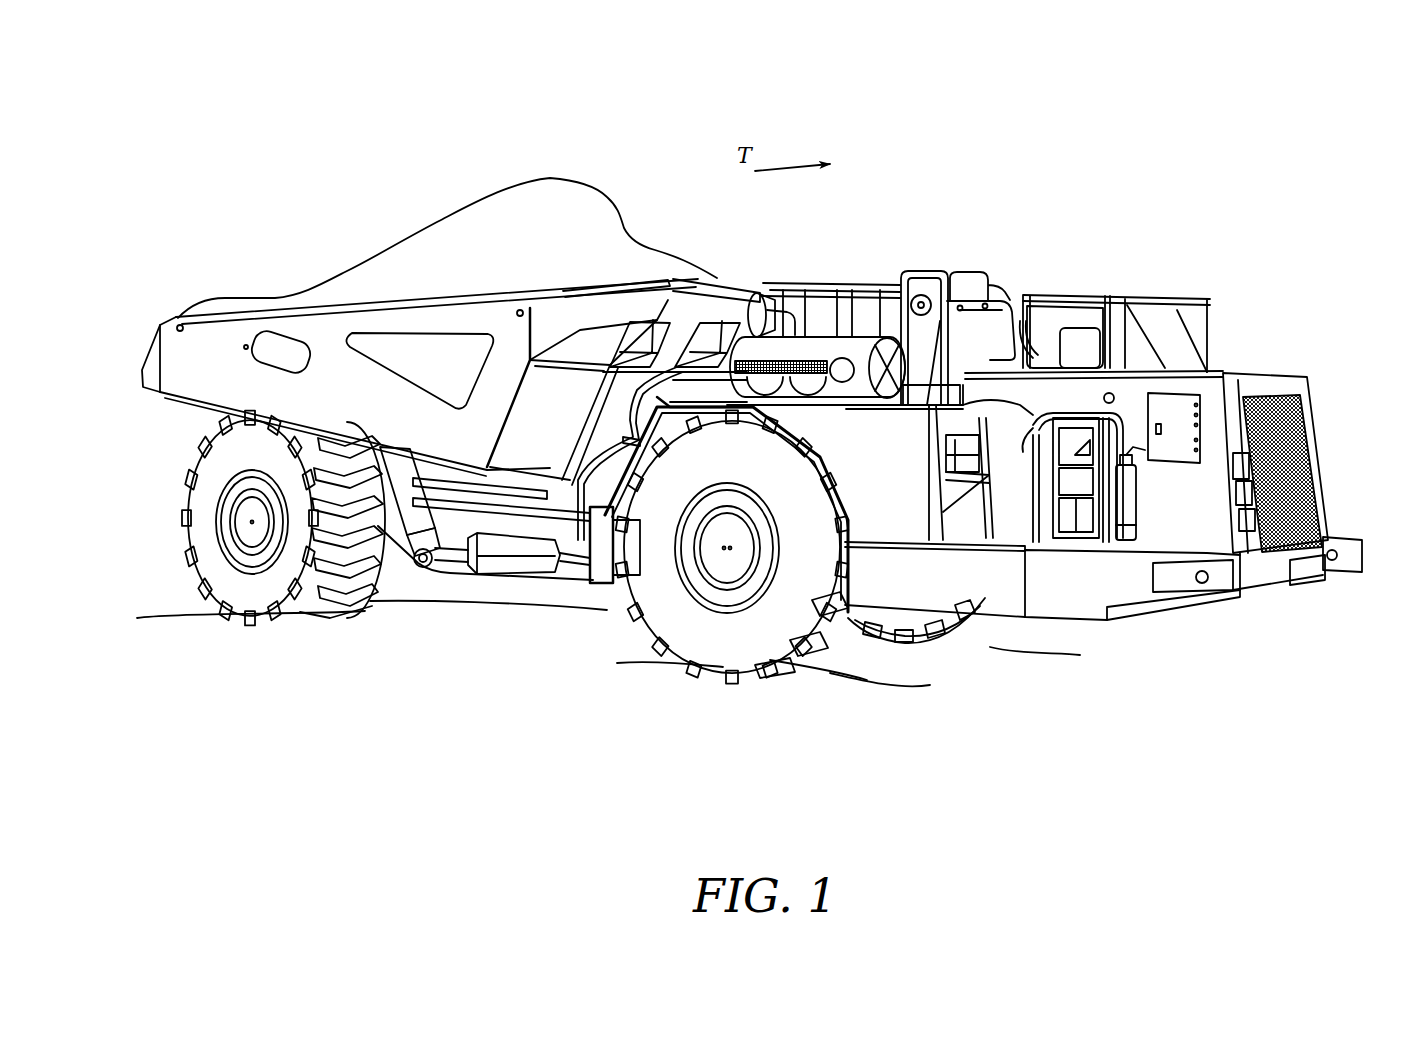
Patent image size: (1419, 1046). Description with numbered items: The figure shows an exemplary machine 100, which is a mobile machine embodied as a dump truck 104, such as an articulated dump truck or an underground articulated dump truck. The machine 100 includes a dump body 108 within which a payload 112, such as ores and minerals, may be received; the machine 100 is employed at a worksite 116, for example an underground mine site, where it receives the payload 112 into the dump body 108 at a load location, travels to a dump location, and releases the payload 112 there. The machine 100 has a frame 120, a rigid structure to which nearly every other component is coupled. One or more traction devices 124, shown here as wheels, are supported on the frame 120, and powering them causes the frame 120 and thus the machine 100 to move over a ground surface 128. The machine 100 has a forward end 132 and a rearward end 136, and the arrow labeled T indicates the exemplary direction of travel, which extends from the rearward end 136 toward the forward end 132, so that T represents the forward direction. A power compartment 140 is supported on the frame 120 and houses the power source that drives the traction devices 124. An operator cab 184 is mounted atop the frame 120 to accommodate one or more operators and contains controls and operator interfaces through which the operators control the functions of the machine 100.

The machine 100 is at (222, 137).
The dump truck 104 is at (328, 182).
The dump body 108 is at (163, 330).
The payload 112 is at (433, 214).
The worksite 116 is at (191, 226).
The frame 120 is at (540, 530).
The traction devices 124 is at (188, 540).
The ground surface 128 is at (155, 618).
The forward end 132 is at (1335, 383).
The rearward end 136 is at (178, 414).
The power compartment 140 is at (1272, 368).
The operator cab 184 is at (1160, 290).